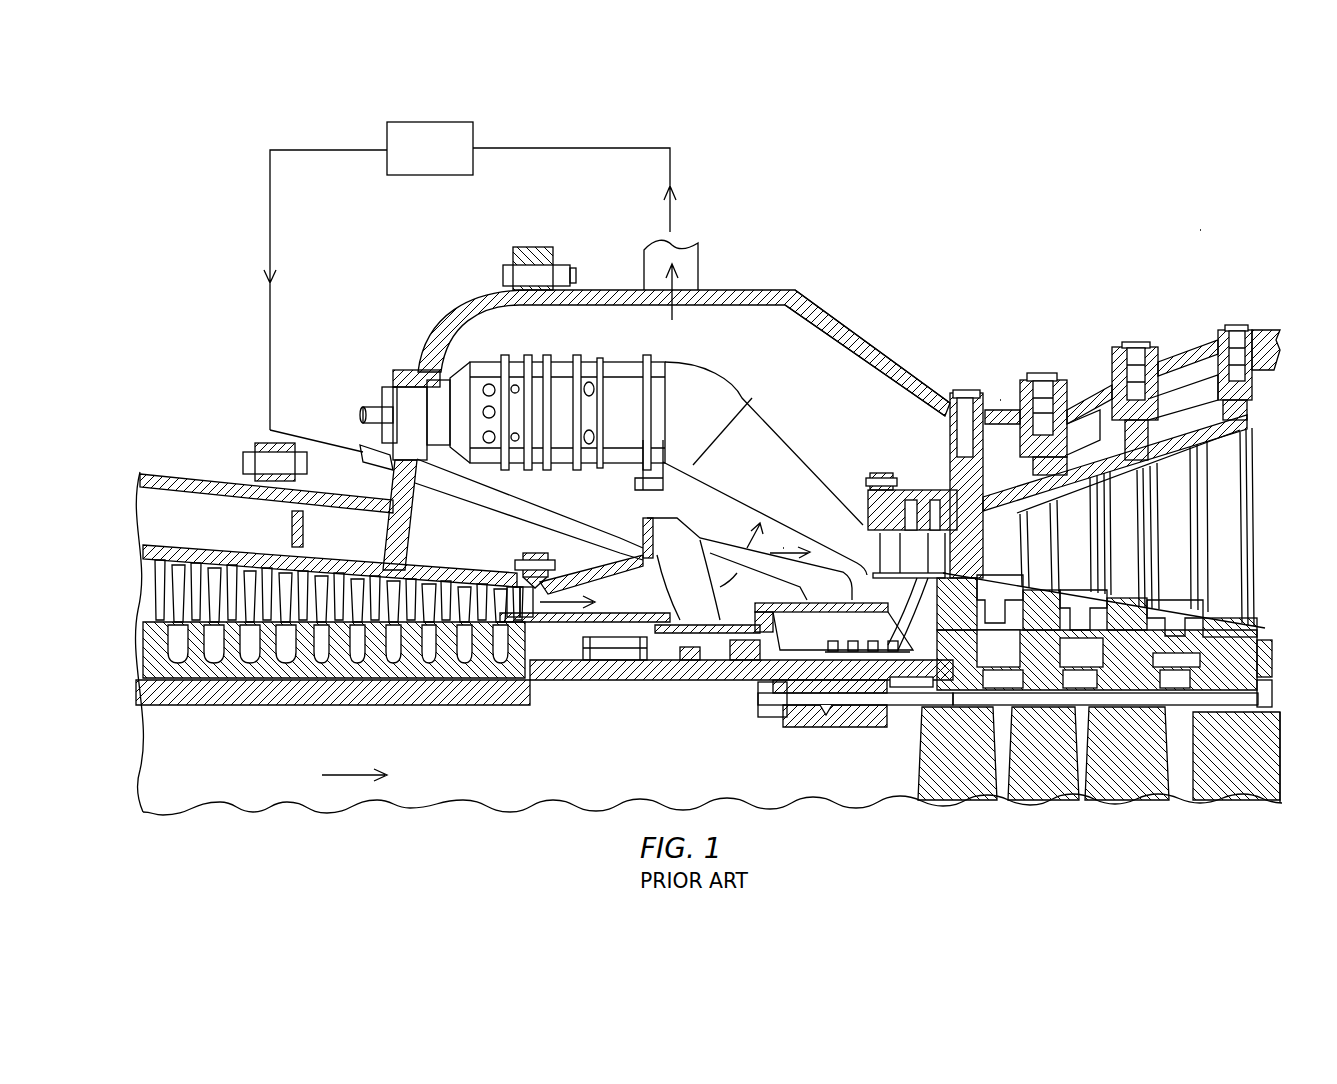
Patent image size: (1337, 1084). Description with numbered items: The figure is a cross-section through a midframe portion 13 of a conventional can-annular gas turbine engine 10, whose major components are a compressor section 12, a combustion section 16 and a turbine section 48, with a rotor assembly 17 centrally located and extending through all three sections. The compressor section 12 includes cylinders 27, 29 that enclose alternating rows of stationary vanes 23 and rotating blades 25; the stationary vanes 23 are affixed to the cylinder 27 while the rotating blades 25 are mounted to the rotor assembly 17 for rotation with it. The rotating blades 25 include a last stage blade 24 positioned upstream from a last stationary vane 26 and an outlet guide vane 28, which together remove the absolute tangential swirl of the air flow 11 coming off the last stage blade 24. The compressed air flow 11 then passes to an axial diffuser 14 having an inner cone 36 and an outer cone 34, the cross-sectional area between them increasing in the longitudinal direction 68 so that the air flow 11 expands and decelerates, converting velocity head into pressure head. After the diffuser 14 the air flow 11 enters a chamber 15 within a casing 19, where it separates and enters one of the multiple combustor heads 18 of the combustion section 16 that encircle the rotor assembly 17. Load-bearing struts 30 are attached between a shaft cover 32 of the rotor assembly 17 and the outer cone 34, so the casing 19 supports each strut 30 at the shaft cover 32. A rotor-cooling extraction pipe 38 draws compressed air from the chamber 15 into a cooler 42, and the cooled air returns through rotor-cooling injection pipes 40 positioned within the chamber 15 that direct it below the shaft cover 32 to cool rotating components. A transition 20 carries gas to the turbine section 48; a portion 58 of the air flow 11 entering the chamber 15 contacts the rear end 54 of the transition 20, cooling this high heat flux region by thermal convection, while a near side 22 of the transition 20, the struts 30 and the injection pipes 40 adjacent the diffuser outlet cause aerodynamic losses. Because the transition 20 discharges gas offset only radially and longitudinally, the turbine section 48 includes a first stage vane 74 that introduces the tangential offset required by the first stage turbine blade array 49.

The can-annular gas turbine engine 10 is at (1150, 186).
The air flow 11 is at (747, 537).
The compressor section 12 is at (196, 437).
The midframe portion 13 is at (837, 242).
The axial diffuser 14 is at (570, 735).
The chamber 15 is at (882, 419).
The combustion section 16 is at (599, 231).
The rotor assembly 17 is at (692, 662).
The combustor heads 18 is at (563, 362).
The casing 19 is at (868, 338).
The transition 20 is at (778, 411).
The near side of the transition 22 is at (733, 493).
The stationary vanes 23 is at (218, 598).
The last stage blade 24 is at (505, 587).
The rotating blades 25 is at (233, 585).
The last stationary vane 26 is at (510, 585).
The cylinder 27 is at (112, 545).
The outlet guide vane 28 is at (535, 553).
The cylinder 29 is at (155, 490).
The load-bearing strut 30 is at (735, 662).
The shaft cover 32 is at (665, 662).
The outer cone 34 is at (600, 583).
The inner cone 36 is at (600, 662).
The rotor-cooling extraction pipe 38 is at (700, 259).
The rotor-cooling injection pipes 40 is at (463, 497).
The cooler 42 is at (430, 178).
The turbine section 48 is at (1192, 318).
The first stage turbine blade array 49 is at (945, 527).
The rear end of the transition 54 is at (847, 537).
The portion of the air flow 58 is at (780, 552).
The longitudinal direction 68 is at (350, 775).
The first stage vane 74 is at (880, 550).